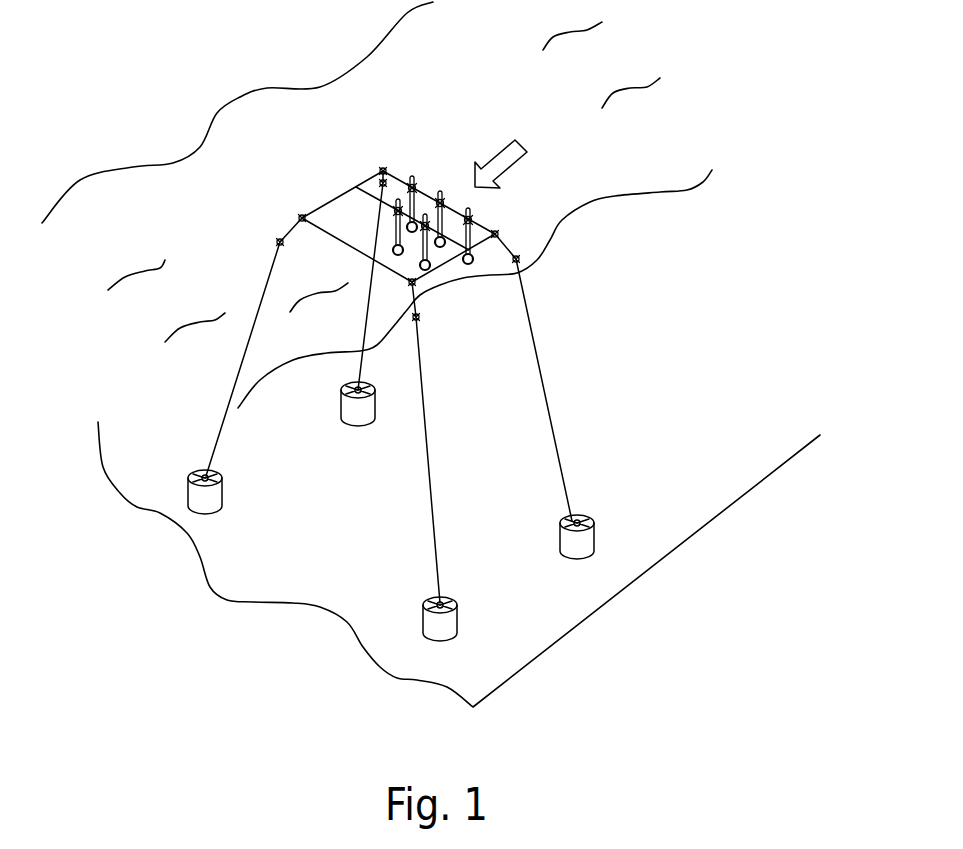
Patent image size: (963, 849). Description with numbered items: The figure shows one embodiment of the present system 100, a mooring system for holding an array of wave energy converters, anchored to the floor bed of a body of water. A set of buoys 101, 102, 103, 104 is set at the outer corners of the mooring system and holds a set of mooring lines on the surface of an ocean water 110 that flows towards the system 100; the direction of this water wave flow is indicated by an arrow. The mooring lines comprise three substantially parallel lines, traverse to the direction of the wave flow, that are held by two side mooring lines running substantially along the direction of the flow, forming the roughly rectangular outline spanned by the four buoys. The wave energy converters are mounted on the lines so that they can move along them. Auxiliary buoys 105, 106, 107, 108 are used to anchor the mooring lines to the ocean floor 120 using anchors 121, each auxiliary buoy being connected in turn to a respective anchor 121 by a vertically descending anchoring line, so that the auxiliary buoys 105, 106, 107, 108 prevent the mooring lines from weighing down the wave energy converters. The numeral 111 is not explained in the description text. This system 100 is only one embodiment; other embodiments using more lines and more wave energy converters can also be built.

The system 100 is at (426, 146).
The buoy 101 is at (383, 168).
The buoy 102 is at (495, 234).
The buoy 103 is at (302, 218).
The buoy 104 is at (412, 282).
The auxiliary buoy 105 is at (383, 171).
The auxiliary buoy 106 is at (516, 259).
The auxiliary buoy 107 is at (280, 242).
The auxiliary buoy 108 is at (416, 317).
The ocean water 110 is at (512, 138).
The terrain contour 111 is at (230, 107).
The ocean floor 120 is at (459, 364).
The anchors 121 is at (223, 492).